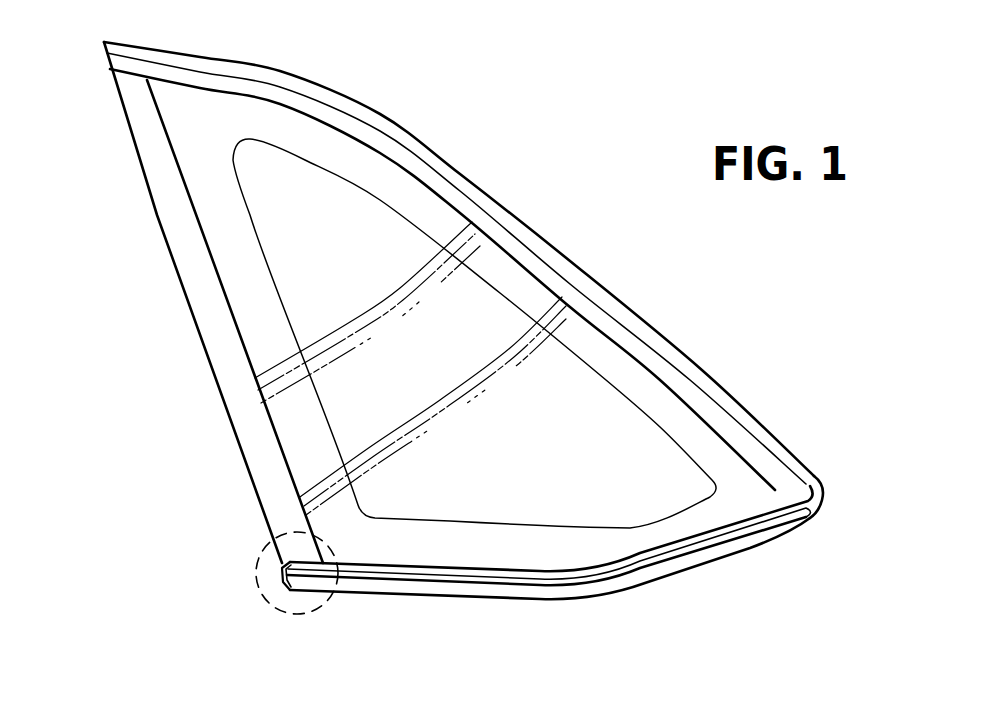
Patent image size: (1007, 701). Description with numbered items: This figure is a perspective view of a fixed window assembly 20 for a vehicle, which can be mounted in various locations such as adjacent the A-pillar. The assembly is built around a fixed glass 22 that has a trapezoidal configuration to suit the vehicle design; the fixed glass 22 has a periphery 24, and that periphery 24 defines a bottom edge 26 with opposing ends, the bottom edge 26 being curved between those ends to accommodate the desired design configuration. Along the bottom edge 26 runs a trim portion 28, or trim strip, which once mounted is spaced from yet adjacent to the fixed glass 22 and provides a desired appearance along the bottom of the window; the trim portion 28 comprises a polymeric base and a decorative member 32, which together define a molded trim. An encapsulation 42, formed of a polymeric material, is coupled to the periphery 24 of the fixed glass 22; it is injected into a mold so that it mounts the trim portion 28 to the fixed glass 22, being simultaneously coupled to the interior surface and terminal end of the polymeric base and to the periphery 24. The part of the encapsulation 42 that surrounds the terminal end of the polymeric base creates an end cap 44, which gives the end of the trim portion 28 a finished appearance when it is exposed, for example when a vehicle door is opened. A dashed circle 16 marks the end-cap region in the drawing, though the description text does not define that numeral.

The detail region 16 is at (336, 606).
The fixed window assembly 20 is at (516, 98).
The fixed glass 22 is at (580, 415).
The periphery 24 is at (246, 103).
The bottom edge 26 is at (820, 498).
The trim portion 28 is at (520, 609).
The decorative member 32 is at (676, 569).
The encapsulation 42 is at (504, 233).
The end cap 44 is at (285, 566).